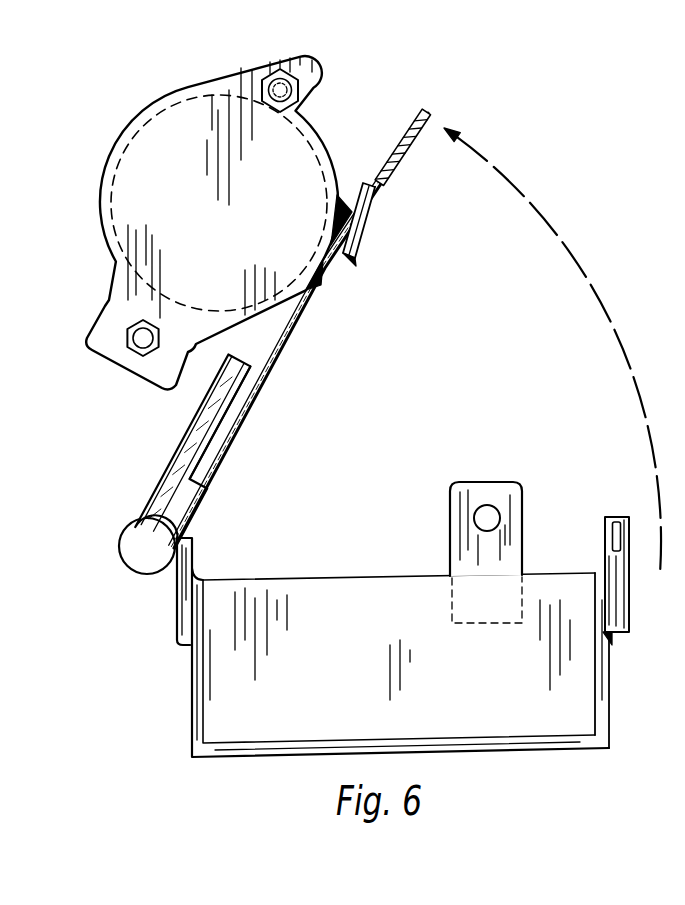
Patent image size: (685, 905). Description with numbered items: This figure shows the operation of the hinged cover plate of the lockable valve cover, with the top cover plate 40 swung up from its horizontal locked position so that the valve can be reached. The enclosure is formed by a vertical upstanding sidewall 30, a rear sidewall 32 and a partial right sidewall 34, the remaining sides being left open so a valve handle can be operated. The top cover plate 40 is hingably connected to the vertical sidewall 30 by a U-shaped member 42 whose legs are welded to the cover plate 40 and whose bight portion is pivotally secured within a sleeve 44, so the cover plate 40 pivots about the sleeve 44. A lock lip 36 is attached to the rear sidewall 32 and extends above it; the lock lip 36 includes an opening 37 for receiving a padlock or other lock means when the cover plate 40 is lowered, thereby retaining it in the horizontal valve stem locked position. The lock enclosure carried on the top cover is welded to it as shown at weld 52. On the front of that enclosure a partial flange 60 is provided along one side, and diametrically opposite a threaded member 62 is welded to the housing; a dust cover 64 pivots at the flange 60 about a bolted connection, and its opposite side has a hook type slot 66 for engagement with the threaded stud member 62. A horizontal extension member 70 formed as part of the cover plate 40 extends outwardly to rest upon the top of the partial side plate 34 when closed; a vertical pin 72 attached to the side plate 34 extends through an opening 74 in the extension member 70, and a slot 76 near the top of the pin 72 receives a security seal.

The vertical upstanding sidewall 30 is at (191, 710).
The rear sidewall 32 is at (339, 686).
The partial right sidewall 34 is at (610, 695).
The lock lip 36 is at (470, 556).
The opening 37 is at (497, 509).
The top cover plate 40 is at (292, 330).
The U-shaped member 42 is at (163, 476).
The sleeve 44 is at (132, 572).
The weld 52 is at (355, 210).
The partial flange 60 is at (113, 310).
The threaded member 62 is at (290, 84).
The dust cover 64 is at (233, 249).
The hook type slot 66 is at (305, 88).
The horizontal extension member 70 is at (433, 113).
The vertical pin 72 is at (630, 614).
The opening 74 is at (391, 158).
The slot 76 is at (612, 528).